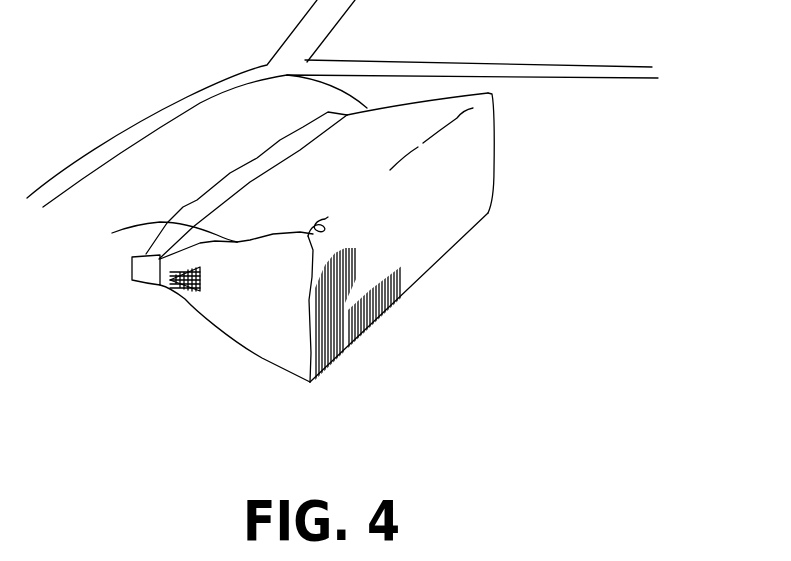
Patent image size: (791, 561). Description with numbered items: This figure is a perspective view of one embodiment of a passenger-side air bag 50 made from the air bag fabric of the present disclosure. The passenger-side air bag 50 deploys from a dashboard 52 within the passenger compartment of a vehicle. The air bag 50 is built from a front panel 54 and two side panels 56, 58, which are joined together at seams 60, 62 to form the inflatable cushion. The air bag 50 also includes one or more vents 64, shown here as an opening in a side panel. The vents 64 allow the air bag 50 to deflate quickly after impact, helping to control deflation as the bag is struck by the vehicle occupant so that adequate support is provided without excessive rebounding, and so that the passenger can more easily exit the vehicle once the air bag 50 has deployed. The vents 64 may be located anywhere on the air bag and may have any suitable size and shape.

The passenger-side air bag 50 is at (317, 412).
The dashboard 52 is at (217, 137).
The front panel 54 is at (417, 222).
The side panel 56 is at (253, 300).
The side panel 58 is at (441, 97).
The seam 60 is at (212, 198).
The seam 62 is at (535, 80).
The vent 64 is at (172, 282).